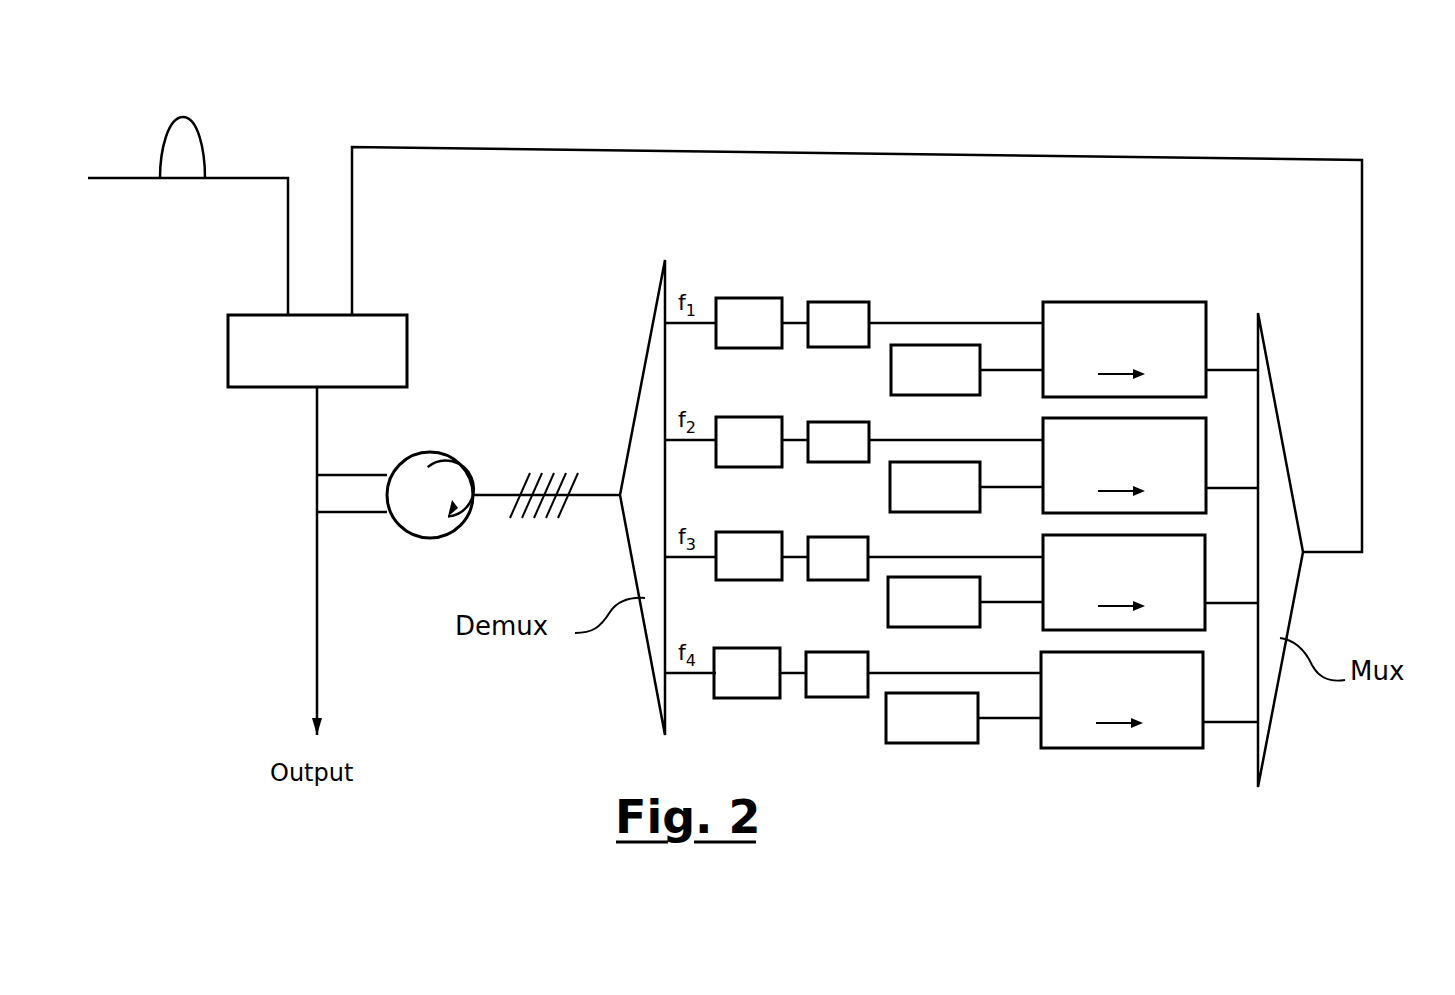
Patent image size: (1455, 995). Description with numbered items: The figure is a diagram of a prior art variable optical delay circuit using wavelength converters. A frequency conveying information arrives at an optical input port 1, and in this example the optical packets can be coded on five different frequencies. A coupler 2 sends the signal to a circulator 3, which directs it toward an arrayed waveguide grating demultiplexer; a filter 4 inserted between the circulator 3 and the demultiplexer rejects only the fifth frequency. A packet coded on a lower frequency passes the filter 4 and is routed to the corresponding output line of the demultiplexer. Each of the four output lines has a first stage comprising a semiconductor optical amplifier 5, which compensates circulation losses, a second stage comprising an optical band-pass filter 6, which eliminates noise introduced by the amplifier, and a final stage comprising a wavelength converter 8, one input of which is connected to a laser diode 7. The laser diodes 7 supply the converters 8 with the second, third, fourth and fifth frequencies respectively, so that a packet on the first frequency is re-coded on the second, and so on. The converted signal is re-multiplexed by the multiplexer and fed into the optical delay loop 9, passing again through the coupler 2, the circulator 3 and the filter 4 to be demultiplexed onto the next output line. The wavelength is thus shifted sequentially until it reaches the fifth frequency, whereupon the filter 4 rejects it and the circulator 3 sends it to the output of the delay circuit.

The optical input port 1 is at (122, 178).
The coupler 2 is at (375, 315).
The circulator 3 is at (445, 538).
The filter 4 is at (540, 515).
The semiconductor optical amplifier 5 is at (750, 298).
The optical band-pass filter 6 is at (838, 302).
The laser diode 7 is at (948, 345).
The wavelength converter 8 is at (1128, 302).
The optical delay loop 9 is at (1362, 262).